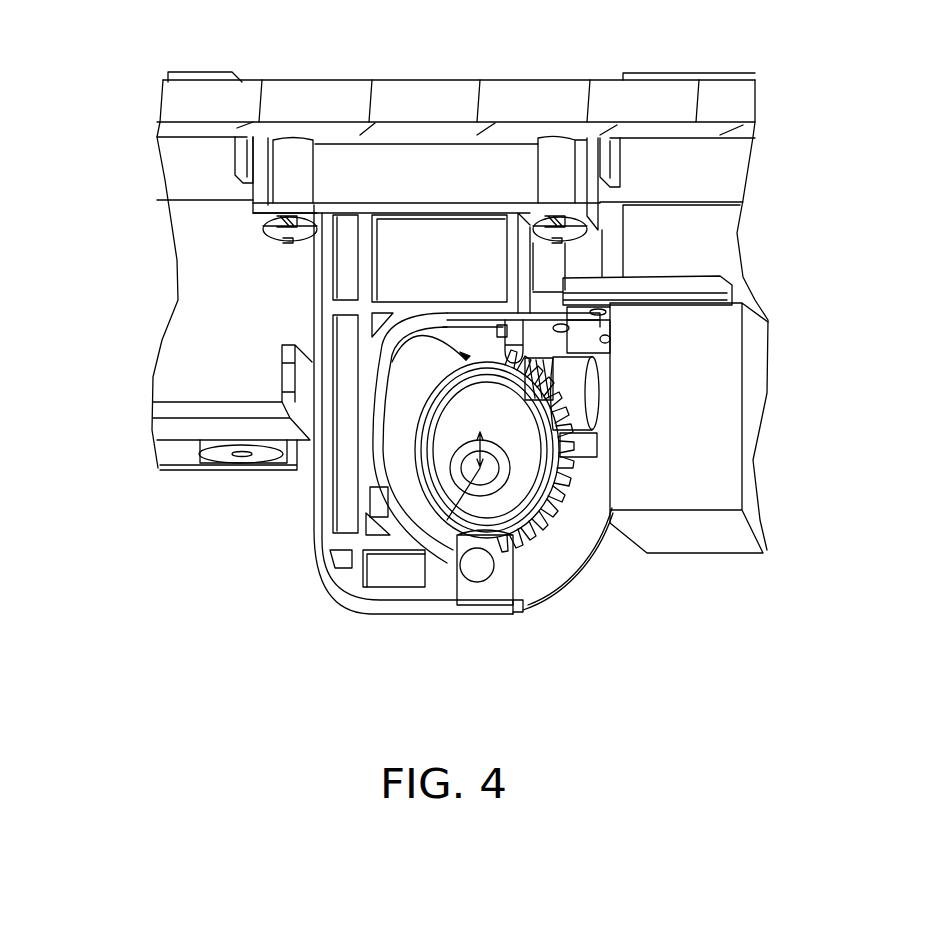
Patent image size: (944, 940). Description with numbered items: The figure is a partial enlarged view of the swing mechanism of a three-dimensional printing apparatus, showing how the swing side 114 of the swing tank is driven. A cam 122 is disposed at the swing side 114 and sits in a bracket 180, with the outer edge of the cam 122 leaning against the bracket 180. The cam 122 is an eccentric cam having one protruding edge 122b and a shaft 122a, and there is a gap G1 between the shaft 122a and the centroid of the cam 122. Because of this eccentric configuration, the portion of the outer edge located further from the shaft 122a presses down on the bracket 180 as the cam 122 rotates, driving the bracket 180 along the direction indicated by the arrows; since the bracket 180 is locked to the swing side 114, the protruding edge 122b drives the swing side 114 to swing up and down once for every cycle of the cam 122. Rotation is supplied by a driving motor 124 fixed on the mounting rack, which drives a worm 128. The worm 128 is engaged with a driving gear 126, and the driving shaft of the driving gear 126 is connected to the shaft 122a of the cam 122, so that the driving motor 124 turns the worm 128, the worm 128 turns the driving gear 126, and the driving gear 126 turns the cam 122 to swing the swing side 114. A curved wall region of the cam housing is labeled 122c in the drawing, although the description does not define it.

The swing side 114 is at (443, 100).
The cam 122 is at (547, 433).
The shaft 122a is at (472, 480).
The protruding edge 122b is at (460, 313).
The curved wall of bracket 122c is at (478, 430).
The driving motor 124 is at (707, 415).
The driving gear 126 is at (562, 525).
The worm 128 is at (560, 350).
The bracket 180 is at (393, 595).
The gap G1 is at (487, 442).